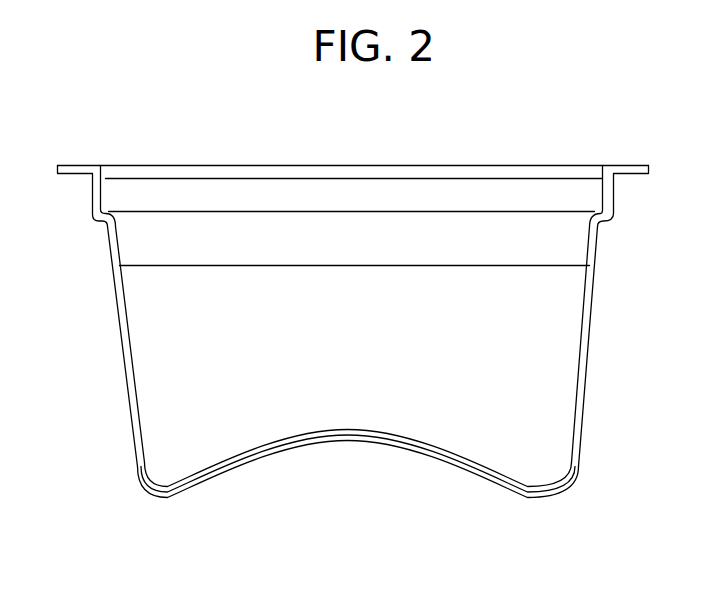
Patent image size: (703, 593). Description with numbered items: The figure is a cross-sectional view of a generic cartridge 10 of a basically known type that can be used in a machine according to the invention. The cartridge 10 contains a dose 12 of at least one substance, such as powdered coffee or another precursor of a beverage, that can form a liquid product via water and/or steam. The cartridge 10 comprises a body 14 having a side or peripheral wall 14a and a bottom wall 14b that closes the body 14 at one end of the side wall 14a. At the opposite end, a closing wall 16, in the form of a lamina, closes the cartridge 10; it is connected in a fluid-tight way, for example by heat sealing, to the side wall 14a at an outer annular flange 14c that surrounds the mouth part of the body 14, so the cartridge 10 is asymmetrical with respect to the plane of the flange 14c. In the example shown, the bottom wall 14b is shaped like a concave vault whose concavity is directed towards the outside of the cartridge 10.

The cartridge 10 is at (588, 112).
The dose 12 is at (162, 312).
The body 14 is at (590, 355).
The side wall 14a is at (124, 365).
The bottom wall 14b is at (227, 477).
The outer annular flange 14c is at (628, 176).
The closing wall 16 is at (255, 165).